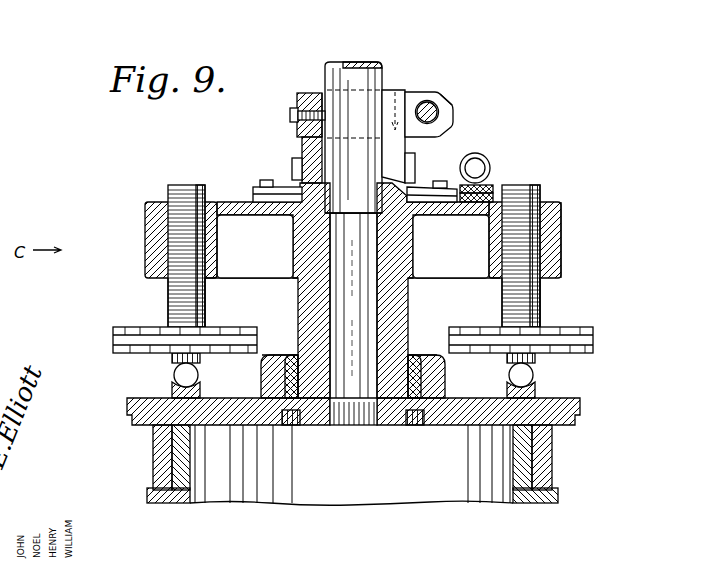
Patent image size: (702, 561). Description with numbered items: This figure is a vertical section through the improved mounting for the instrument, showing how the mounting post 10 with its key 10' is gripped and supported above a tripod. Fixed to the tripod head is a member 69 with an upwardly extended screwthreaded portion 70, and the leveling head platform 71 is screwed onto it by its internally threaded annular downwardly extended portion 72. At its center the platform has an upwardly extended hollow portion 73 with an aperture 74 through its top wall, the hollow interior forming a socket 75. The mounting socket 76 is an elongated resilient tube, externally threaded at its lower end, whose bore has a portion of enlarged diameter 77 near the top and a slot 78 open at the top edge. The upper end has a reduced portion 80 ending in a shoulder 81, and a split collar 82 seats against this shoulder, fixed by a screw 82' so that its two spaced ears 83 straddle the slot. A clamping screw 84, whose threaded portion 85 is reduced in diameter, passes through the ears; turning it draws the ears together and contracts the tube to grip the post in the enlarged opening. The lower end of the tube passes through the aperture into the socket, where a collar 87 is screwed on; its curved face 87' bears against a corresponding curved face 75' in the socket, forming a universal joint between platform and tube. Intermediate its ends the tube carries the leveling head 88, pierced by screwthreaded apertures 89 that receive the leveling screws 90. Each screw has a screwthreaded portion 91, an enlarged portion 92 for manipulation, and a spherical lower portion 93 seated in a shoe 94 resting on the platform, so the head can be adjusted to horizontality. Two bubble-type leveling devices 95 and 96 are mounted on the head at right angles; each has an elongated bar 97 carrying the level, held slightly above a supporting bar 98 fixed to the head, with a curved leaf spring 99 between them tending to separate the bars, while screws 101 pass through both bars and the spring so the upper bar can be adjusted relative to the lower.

The mounting post 10 is at (353, 113).
The key 10' is at (420, 109).
The member 69 is at (535, 503).
The screwthreaded portion 70 is at (195, 473).
The leveling head platform 71 is at (583, 418).
The annular downwardly extended portion 72 is at (553, 462).
The upwardly extended hollow portion 73 is at (262, 380).
The aperture 74 is at (292, 355).
The socket 75 is at (353, 374).
The curved face 75' is at (334, 352).
The mounting socket 76 is at (392, 318).
The portion of enlarged diameter 77 is at (318, 186).
The slot 78 is at (415, 97).
The reduced portion 80 is at (320, 93).
The shoulder 81 is at (302, 146).
The split collar 82 is at (295, 103).
The screw 82' is at (282, 117).
The ears 83 is at (447, 103).
The clamping screw 84 is at (440, 113).
The screwthreaded portion of clamping screw 85 is at (437, 110).
The collar 87 is at (353, 441).
The curved face 87' is at (457, 376).
The leveling head 88 is at (562, 217).
The screwthreaded apertures 89 is at (145, 233).
The leveling screws 90 is at (168, 300).
The screwthreaded portion 91 is at (190, 184).
The enlarged portion 92 is at (113, 337).
The spherical lower portion 93 is at (174, 374).
The shoe 94 is at (170, 388).
The leveling device 95 is at (491, 158).
The leveling device 96 is at (413, 170).
The elongated bar 97 is at (252, 186).
The bars 98 is at (488, 198).
The leaf spring 99 is at (480, 196).
The screws 101 is at (262, 179).